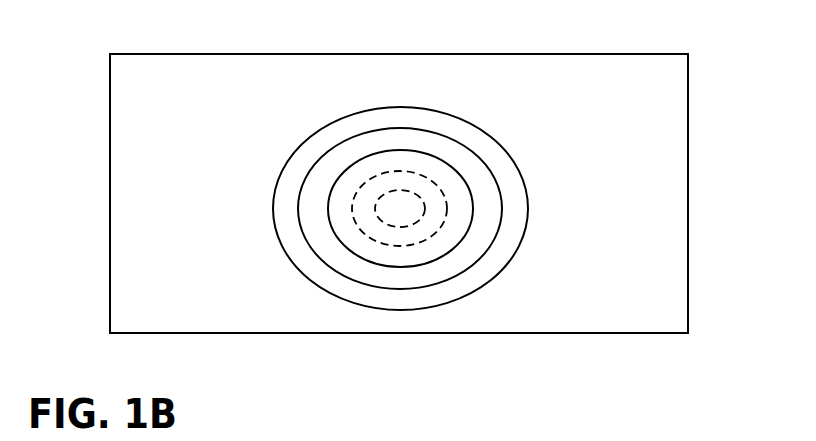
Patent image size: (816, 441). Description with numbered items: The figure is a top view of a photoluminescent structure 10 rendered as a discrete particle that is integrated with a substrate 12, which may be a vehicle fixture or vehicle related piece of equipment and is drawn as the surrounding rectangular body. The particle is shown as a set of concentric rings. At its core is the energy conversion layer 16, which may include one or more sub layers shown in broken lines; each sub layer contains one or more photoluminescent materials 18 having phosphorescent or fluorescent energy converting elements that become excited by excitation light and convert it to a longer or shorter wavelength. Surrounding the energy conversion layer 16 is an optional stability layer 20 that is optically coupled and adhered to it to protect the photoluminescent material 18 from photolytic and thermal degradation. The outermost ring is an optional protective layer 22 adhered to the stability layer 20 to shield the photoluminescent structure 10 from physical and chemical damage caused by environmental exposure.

The photoluminescent structure 10 is at (313, 116).
The substrate 12 is at (688, 148).
The energy conversion layer 16 is at (450, 250).
The photoluminescent material 18 is at (387, 222).
The stability layer 20 is at (460, 142).
The protective layer 22 is at (433, 108).